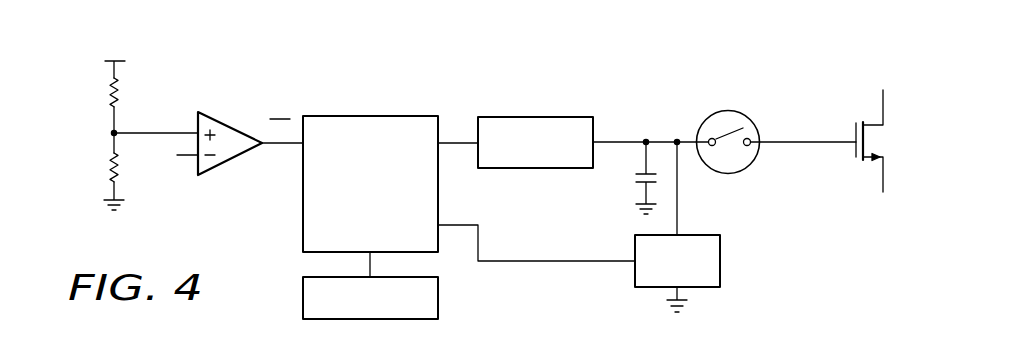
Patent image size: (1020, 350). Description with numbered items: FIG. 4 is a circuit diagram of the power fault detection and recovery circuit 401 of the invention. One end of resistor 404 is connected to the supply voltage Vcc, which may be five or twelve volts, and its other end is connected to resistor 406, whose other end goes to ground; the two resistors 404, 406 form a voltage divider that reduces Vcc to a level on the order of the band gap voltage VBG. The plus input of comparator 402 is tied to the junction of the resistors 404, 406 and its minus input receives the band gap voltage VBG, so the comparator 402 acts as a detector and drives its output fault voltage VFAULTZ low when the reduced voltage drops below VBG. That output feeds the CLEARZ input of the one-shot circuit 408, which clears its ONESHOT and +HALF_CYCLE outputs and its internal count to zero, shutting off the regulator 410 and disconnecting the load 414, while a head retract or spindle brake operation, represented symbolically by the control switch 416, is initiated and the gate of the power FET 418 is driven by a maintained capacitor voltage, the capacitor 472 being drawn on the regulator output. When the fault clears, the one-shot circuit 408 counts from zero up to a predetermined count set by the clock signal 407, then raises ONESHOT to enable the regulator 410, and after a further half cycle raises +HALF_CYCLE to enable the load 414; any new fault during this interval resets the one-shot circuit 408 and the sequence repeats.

The power-down retract/brake control circuit 401 is at (649, 59).
The comparator 402 is at (231, 163).
The resistor 404 is at (110, 93).
The resistor 406 is at (108, 166).
The clock signal 407 is at (302, 298).
The one-shot circuit 408 is at (371, 116).
The regulator 410 is at (535, 117).
The load 414 is at (702, 288).
The control switch 416 is at (748, 166).
The power FET 418 is at (855, 130).
The capacitor 472 is at (636, 176).